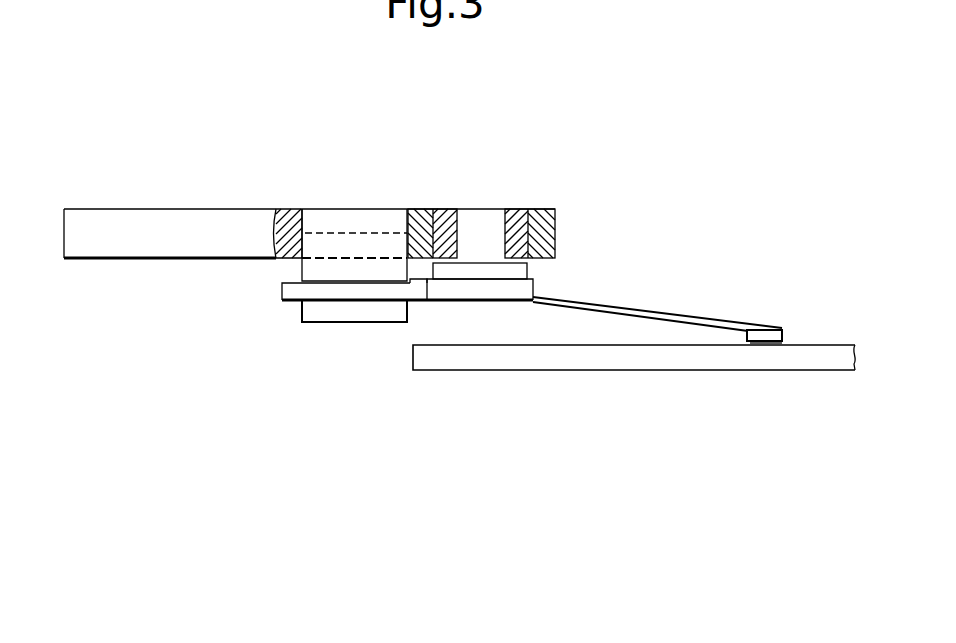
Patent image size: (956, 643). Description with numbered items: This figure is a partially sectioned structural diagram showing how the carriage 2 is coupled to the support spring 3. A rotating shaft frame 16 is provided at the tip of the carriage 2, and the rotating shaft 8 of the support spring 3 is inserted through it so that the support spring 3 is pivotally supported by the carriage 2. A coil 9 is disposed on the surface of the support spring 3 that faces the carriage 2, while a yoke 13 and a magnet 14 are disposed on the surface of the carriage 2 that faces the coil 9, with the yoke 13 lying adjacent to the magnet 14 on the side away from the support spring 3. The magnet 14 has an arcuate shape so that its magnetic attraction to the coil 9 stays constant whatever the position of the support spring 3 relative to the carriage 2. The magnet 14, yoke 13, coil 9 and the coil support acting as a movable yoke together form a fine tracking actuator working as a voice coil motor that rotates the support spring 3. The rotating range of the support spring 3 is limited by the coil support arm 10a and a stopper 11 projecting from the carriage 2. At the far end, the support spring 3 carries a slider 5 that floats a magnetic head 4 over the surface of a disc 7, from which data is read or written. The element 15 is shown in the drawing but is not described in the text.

The carriage 2 is at (187, 210).
The yoke 13 is at (320, 208).
The magnet 14 is at (362, 233).
The rotating shaft 8 is at (475, 207).
The rotating shaft frame 16 is at (515, 208).
The spacer plate 15 is at (537, 280).
The coil support arm 10a is at (280, 292).
The coil 9 is at (380, 305).
The stopper 11 is at (317, 322).
The support spring 3 is at (700, 320).
The magnetic head 4 is at (783, 342).
The slider 5 is at (762, 343).
The disc 7 is at (453, 370).